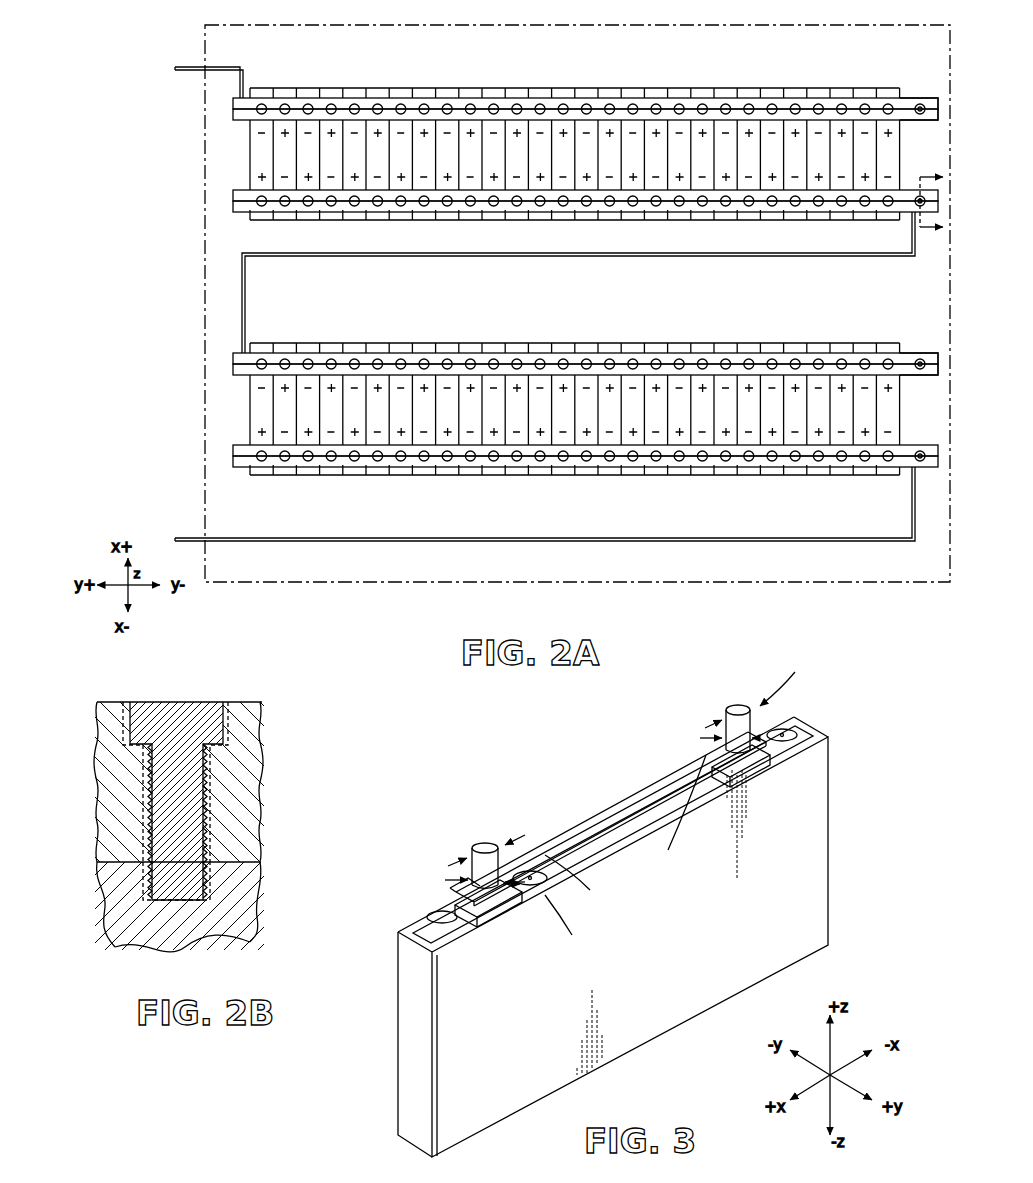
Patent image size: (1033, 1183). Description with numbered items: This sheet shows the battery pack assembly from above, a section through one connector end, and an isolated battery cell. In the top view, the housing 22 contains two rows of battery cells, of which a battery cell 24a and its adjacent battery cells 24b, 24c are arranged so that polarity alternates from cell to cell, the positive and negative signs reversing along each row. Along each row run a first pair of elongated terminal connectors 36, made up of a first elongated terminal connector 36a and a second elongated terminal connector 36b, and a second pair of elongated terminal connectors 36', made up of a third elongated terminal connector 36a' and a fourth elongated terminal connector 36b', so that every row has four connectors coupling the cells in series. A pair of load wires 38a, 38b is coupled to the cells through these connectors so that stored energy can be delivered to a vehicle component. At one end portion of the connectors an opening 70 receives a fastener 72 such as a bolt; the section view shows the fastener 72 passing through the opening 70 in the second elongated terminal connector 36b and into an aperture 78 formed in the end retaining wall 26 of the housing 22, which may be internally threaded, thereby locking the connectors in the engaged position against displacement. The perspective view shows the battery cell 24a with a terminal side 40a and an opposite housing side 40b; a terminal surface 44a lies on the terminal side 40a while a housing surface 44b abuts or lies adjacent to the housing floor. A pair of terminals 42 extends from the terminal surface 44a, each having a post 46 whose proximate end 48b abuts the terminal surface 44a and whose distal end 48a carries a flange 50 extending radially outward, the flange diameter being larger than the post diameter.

In FIG. 2A, the housing 22 is at (205, 182).
In FIG. 2A, the battery cell 24a is at (305, 88).
In FIG. 3, the battery cell 24a is at (640, 902).
In FIG. 2A, the adjacent battery cell 24b is at (292, 88).
In FIG. 2A, the adjacent battery cell 24c is at (333, 88).
In FIG. 2B, the end retaining wall 26 is at (238, 920).
In FIG. 2A, the pair of elongated terminal connectors 36 is at (620, 341).
In FIG. 2A, the second pair of elongated terminal connectors 36' is at (919, 204).
In FIG. 2A, the first elongated terminal connector 36a is at (542, 334).
In FIG. 2A, the second elongated terminal connector 36b is at (542, 323).
In FIG. 2B, the second elongated terminal connector 36b is at (210, 739).
In FIG. 2A, the third elongated terminal connector 36a' is at (540, 222).
In FIG. 2A, the fourth elongated terminal connector 36b' is at (543, 253).
In FIG. 2A, the load wire 38a is at (197, 66).
In FIG. 2A, the load wire 38b is at (193, 538).
In FIG. 3, the terminal side 40a is at (770, 718).
In FIG. 3, the housing side 40b is at (810, 973).
In FIG. 3, the pair of terminals 42 is at (675, 765).
In FIG. 3, the terminal surface 44a is at (640, 812).
In FIG. 3, the housing surface 44b is at (665, 1035).
In FIG. 3, the post 46 is at (745, 745).
In FIG. 3, the distal end 48a is at (465, 866).
In FIG. 3, the proximate end 48b is at (505, 905).
In FIG. 3, the flange 50 is at (735, 708).
In FIG. 2A, the opening 70 is at (915, 101).
In FIG. 2B, the opening 70 is at (230, 720).
In FIG. 2A, the fastener 72 is at (920, 114).
In FIG. 2B, the fastener 72 is at (185, 714).
In FIG. 2B, the aperture 78 is at (210, 876).